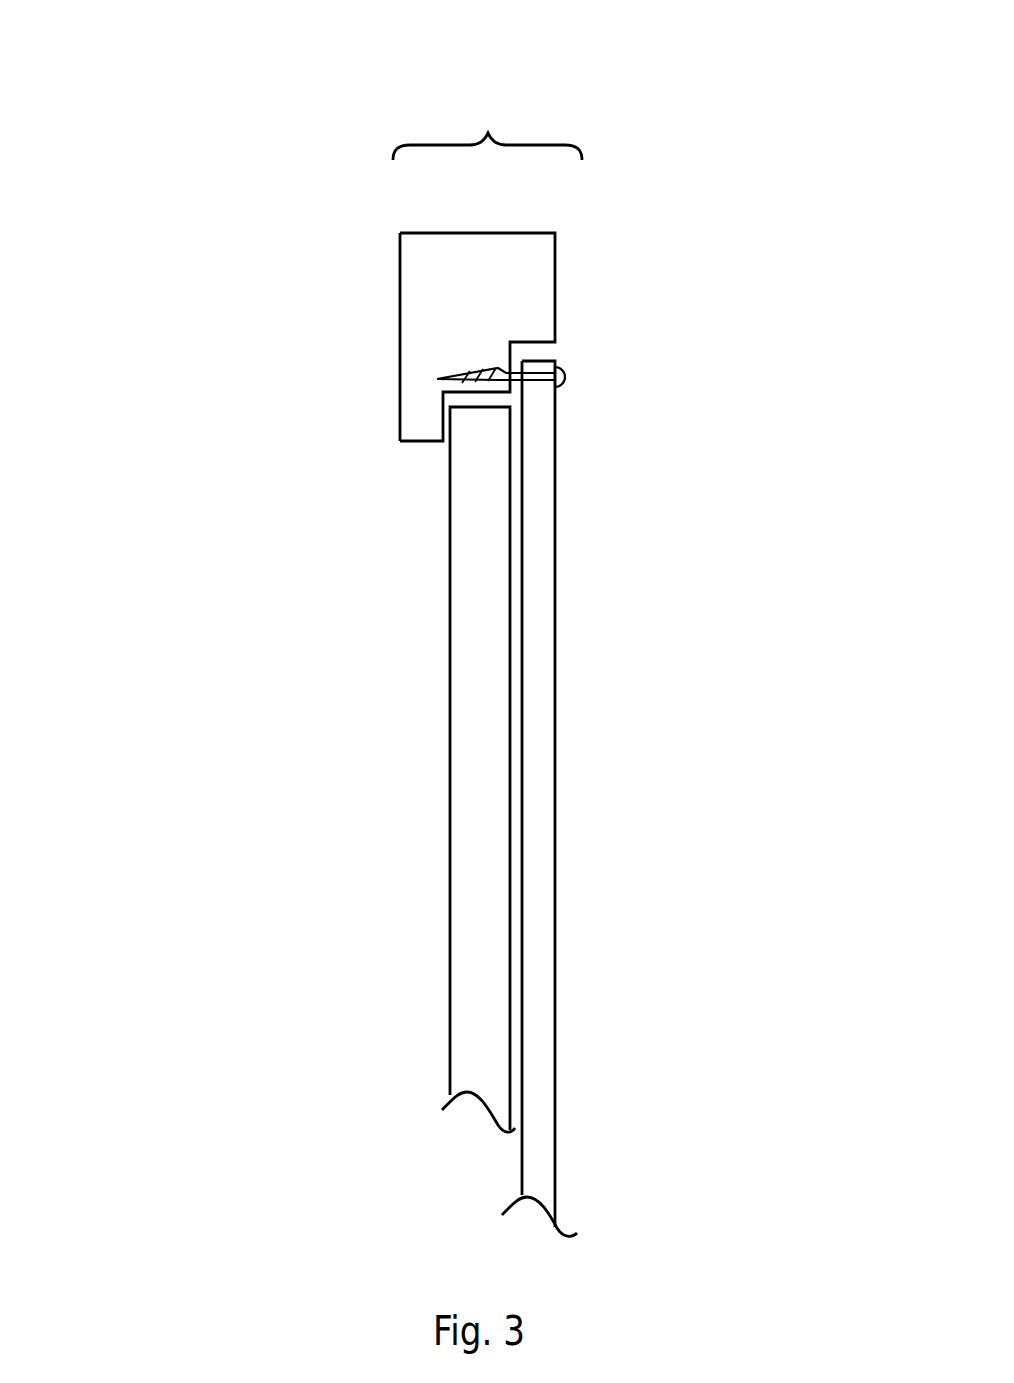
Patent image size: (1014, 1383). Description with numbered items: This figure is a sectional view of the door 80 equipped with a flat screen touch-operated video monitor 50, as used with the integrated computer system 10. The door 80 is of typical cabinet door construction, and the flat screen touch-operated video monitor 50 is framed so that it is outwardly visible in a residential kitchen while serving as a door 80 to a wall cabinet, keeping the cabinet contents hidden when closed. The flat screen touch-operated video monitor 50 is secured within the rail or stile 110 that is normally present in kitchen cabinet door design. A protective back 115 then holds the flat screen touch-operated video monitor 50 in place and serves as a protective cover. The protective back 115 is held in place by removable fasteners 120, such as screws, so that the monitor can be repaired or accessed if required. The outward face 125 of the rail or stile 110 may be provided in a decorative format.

The integrated computer system 10 is at (112, 182).
The flat screen touch-operated video monitor 50 is at (475, 617).
The door 80 is at (488, 133).
The rail or stile 110 is at (498, 270).
The protective back 115 is at (537, 510).
The removable fasteners 120 is at (568, 371).
The outward face 125 is at (400, 334).